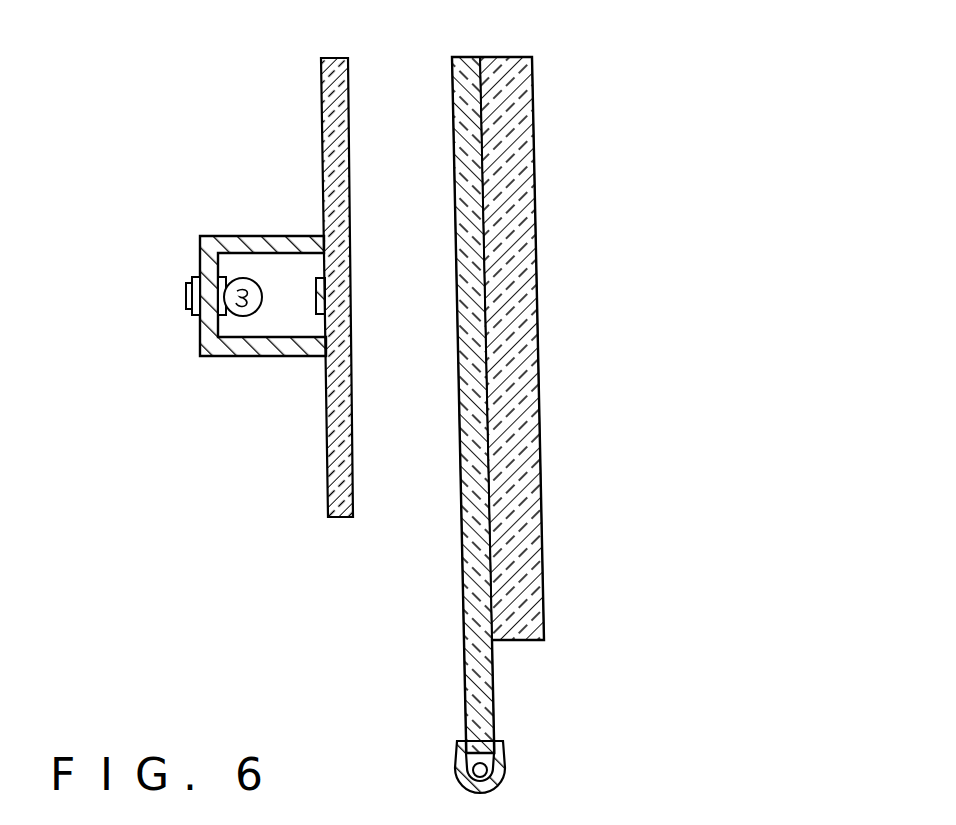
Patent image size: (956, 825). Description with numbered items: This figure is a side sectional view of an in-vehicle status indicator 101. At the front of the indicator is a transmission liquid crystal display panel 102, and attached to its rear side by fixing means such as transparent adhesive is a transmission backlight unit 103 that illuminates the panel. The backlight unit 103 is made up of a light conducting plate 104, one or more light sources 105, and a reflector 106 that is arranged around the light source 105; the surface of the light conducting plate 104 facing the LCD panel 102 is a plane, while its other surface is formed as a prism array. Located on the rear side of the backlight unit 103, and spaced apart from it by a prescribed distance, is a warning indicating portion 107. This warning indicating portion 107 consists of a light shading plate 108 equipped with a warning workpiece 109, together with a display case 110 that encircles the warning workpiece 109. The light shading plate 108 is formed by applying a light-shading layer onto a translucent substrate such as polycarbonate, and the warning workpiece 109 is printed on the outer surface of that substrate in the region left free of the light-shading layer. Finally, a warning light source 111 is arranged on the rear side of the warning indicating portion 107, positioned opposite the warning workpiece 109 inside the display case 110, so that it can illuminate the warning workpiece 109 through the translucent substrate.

The in-vehicle status indicator 101 is at (375, 38).
The transmission liquid crystal display panel 102 is at (520, 108).
The transmission backlight unit 103 is at (465, 622).
The light conducting plate 104 is at (498, 650).
The light source 105 is at (509, 783).
The reflector 106 is at (509, 767).
The warning indicating portion 107 is at (321, 110).
The light shading plate 108 is at (323, 172).
The warning workpiece 109 is at (316, 302).
The display case 110 is at (253, 236).
The warning light source 111 is at (240, 318).